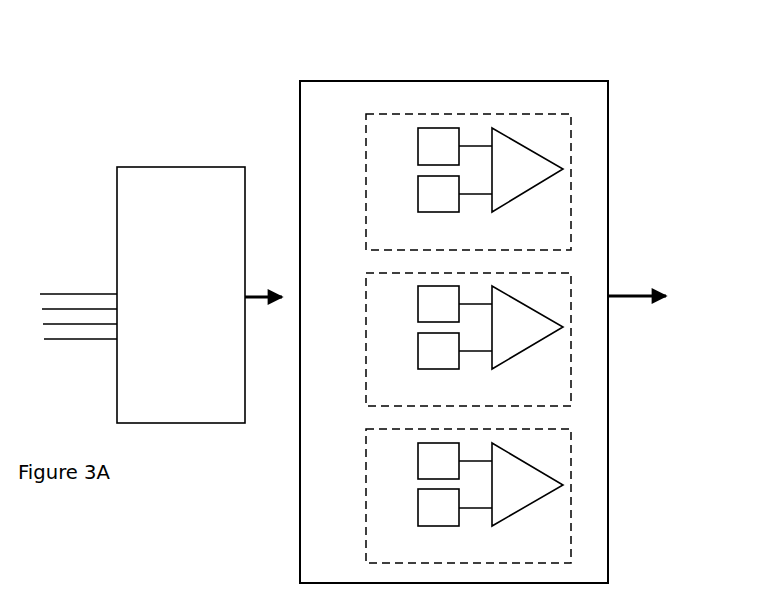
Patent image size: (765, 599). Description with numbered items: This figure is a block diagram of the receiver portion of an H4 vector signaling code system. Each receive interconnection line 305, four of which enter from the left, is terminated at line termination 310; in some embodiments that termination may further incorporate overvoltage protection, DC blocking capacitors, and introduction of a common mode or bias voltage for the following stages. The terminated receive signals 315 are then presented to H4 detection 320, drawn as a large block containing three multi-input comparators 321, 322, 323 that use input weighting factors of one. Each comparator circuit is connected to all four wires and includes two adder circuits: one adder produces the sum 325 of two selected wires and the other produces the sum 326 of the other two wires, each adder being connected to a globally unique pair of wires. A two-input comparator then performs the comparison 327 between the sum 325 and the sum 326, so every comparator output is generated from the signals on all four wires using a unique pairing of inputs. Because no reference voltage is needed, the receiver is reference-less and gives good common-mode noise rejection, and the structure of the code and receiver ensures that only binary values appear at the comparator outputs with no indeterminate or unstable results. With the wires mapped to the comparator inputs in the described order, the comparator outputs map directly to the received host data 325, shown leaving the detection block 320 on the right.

The receive interconnection line 305 is at (71, 289).
The line termination 310 is at (229, 162).
The terminated receive signals 315 is at (264, 291).
The H4 detection 320 is at (297, 437).
The first multi-input comparator 321 is at (361, 168).
The second multi-input comparator 322 is at (361, 323).
The third multi-input comparator 323 is at (361, 483).
The sum of two selected wires 325 is at (638, 289).
The sum of the other two wires 326 is at (415, 198).
The comparison 327 is at (542, 189).